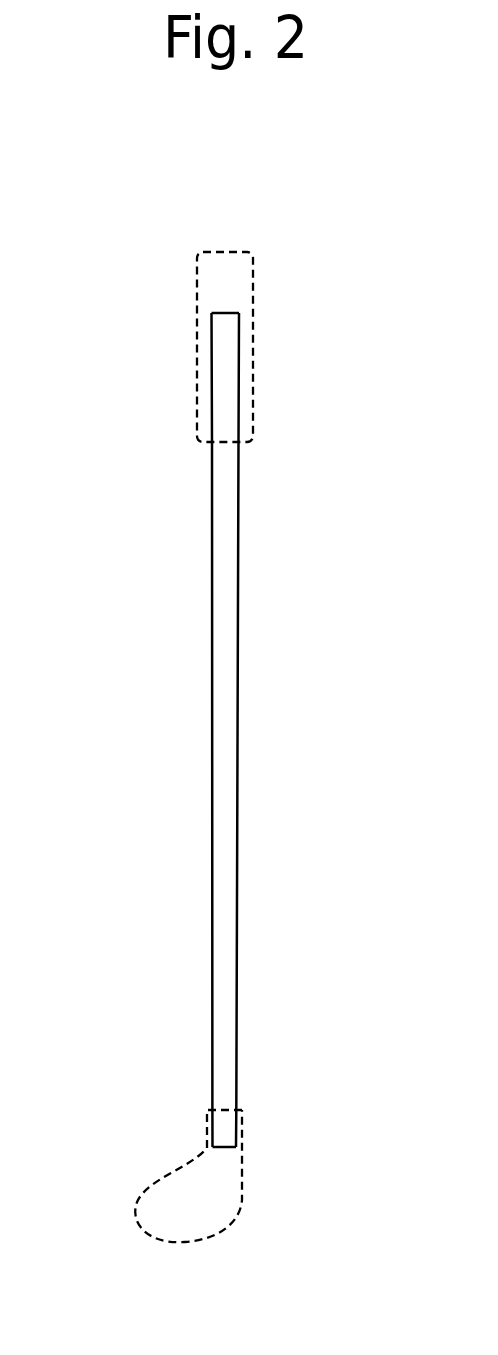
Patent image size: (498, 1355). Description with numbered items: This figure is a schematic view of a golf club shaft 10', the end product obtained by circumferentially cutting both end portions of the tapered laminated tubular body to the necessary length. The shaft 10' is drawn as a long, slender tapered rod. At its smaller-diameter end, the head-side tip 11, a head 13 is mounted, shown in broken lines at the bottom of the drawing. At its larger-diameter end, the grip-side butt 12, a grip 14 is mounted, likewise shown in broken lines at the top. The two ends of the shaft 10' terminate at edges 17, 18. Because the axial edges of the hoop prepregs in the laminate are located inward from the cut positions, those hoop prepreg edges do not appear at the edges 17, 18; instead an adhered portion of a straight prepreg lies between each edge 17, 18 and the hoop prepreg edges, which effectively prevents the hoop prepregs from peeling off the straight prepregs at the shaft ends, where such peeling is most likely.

The shaft 10' is at (213, 715).
The head-side tip 11 is at (237, 1128).
The grip-side butt 12 is at (227, 393).
The head 13 is at (222, 1232).
The grip 14 is at (253, 312).
The edge of the shaft 17 is at (215, 1149).
The edge of the shaft 18 is at (223, 313).